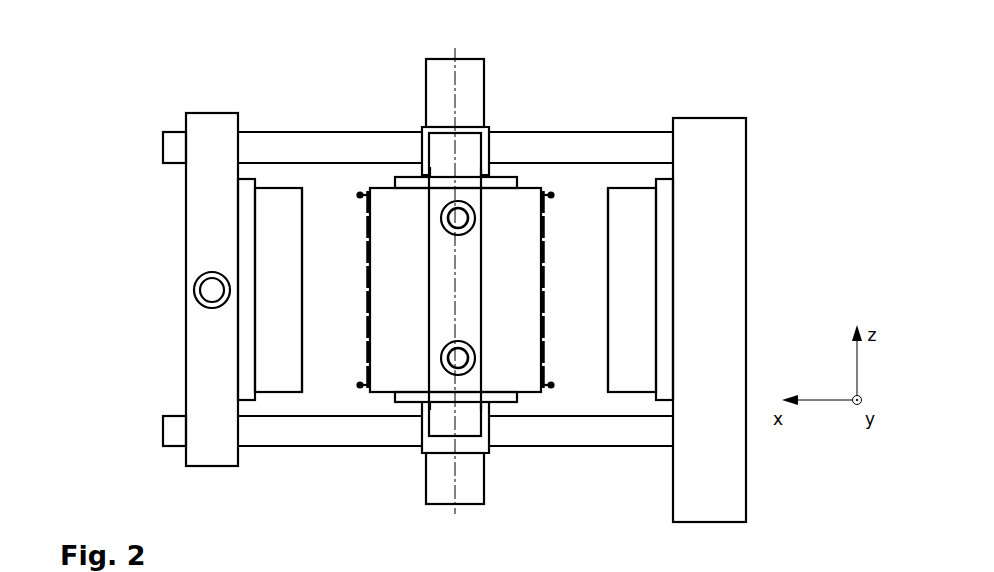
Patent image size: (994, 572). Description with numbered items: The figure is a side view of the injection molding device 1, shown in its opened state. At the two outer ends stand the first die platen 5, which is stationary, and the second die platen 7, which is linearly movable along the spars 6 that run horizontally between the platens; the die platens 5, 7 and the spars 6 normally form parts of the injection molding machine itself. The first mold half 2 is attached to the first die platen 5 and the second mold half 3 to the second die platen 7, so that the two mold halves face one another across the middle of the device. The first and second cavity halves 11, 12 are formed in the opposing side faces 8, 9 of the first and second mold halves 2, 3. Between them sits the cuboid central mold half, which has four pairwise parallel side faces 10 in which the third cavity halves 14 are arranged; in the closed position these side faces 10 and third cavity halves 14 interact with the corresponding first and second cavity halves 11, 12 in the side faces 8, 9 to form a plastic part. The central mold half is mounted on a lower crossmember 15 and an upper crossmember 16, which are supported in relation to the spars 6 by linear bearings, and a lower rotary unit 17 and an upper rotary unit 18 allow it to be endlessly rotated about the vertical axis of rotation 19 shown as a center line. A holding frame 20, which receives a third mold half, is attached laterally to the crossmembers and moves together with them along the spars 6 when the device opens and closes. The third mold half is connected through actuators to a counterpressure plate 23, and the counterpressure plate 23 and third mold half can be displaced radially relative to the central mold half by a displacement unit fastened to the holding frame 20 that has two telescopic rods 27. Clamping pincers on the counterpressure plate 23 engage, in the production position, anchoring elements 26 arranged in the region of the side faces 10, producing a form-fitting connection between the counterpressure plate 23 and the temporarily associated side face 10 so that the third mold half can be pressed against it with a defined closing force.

The injection molding device 1 is at (148, 96).
The first mold half 2 is at (675, 225).
The second mold half 3 is at (280, 263).
The first die platen 5 is at (746, 290).
The spars 6 is at (170, 148).
The second die platen 7 is at (207, 388).
The side face 8 is at (726, 290).
The side face 9 is at (300, 237).
The side faces 10 is at (355, 377).
The first cavity halves 11 is at (732, 289).
The second cavity halves 12 is at (300, 308).
The third cavity halves 14 is at (281, 224).
The lower crossmember 15 is at (433, 483).
The upper crossmember 16 is at (483, 117).
The lower rotary unit 17 is at (485, 508).
The upper rotary unit 18 is at (438, 90).
The axis of rotation 19 is at (539, 293).
The holding frame 20 is at (387, 247).
The counterpressure plate 23 is at (430, 370).
The anchoring elements 26 is at (457, 311).
The telescopic rods 27 is at (532, 272).